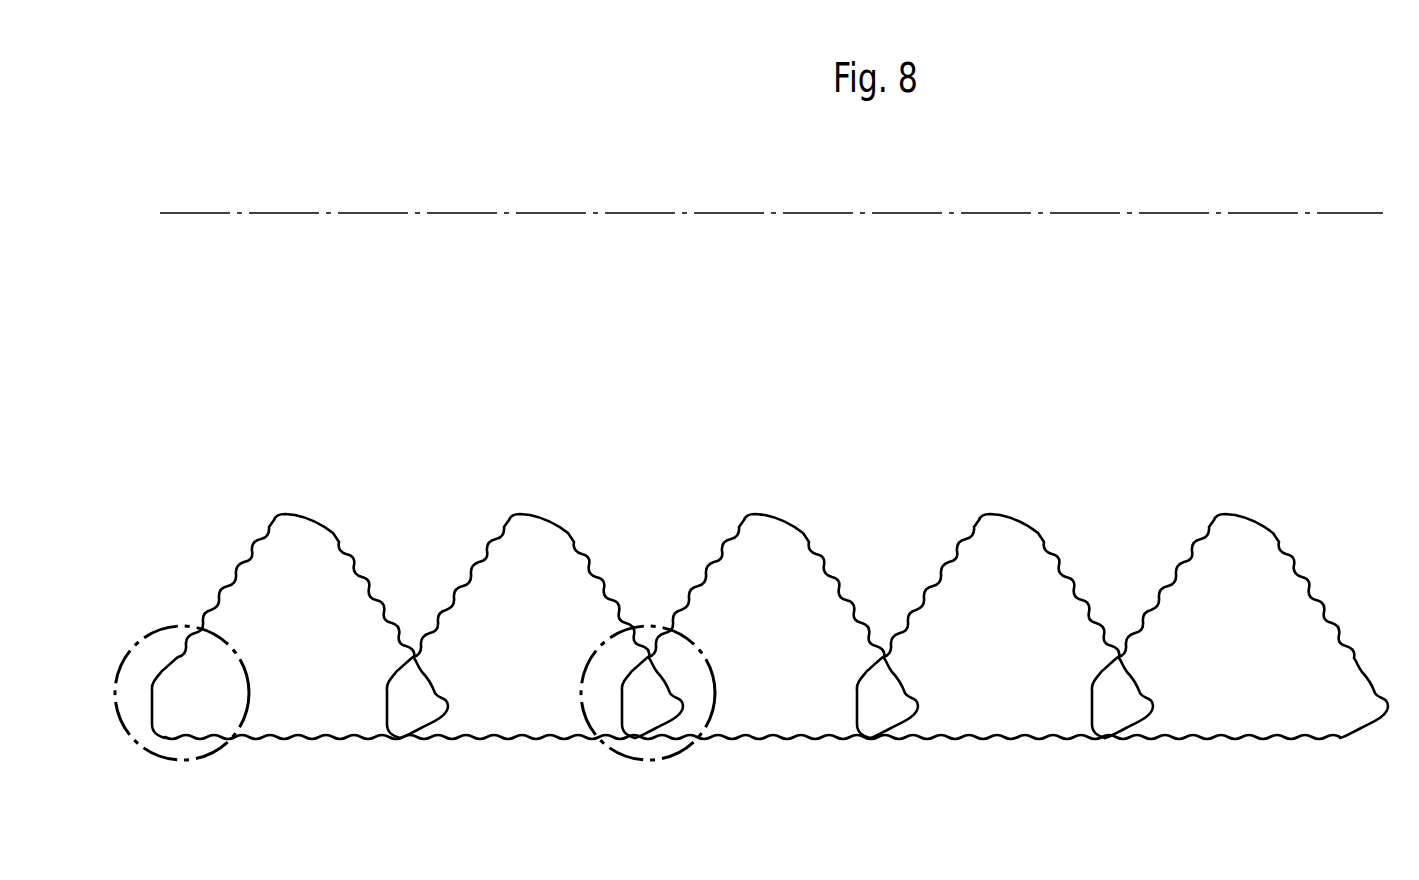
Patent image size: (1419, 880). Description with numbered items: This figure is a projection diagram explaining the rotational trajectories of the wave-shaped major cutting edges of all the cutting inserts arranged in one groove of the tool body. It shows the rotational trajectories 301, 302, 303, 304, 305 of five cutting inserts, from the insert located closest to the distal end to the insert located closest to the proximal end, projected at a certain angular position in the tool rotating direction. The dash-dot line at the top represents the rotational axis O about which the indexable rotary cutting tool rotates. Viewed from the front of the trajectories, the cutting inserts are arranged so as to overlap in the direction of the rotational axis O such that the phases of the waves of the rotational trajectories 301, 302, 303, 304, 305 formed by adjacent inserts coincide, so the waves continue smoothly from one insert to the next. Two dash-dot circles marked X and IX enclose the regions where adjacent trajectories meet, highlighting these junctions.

The rotational trajectory 301 is at (313, 520).
The rotational trajectory 302 is at (548, 520).
The rotational trajectory 303 is at (783, 520).
The rotational trajectory 304 is at (1018, 520).
The rotational trajectory 305 is at (1253, 520).
The detail region X is at (186, 762).
The detail region IX is at (650, 762).
The rotational axis O is at (788, 214).